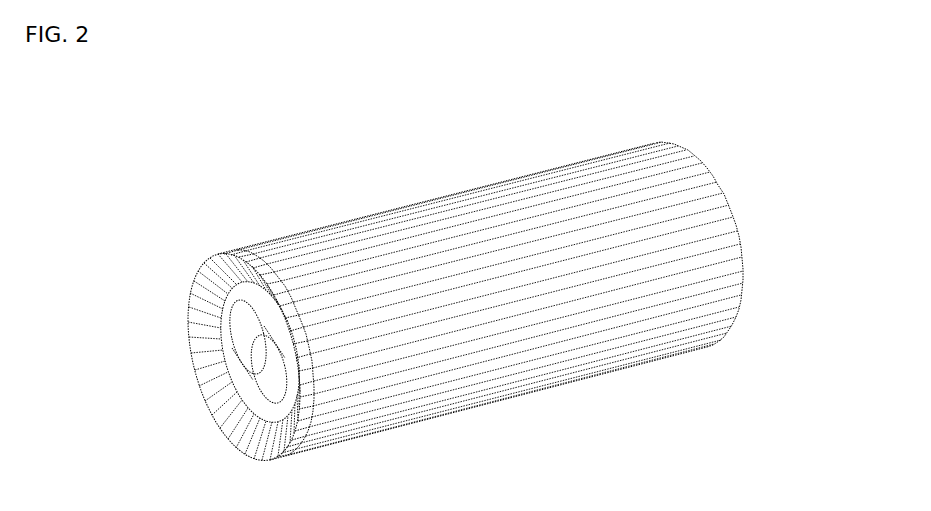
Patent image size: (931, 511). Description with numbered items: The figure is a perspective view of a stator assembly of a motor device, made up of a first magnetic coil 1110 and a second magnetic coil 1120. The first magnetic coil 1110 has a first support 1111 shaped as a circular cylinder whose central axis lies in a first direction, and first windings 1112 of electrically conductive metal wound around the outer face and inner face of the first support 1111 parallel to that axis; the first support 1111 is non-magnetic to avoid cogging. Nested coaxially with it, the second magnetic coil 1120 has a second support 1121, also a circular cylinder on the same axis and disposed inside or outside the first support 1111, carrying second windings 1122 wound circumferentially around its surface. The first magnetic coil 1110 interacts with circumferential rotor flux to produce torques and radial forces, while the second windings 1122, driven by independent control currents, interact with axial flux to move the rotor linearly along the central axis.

The first magnetic coil 1110 is at (258, 183).
The first support 1111 is at (418, 260).
The first windings 1112 is at (475, 218).
The second magnetic coil 1120 is at (94, 225).
The second support 1121 is at (240, 290).
The second windings 1122 is at (258, 368).